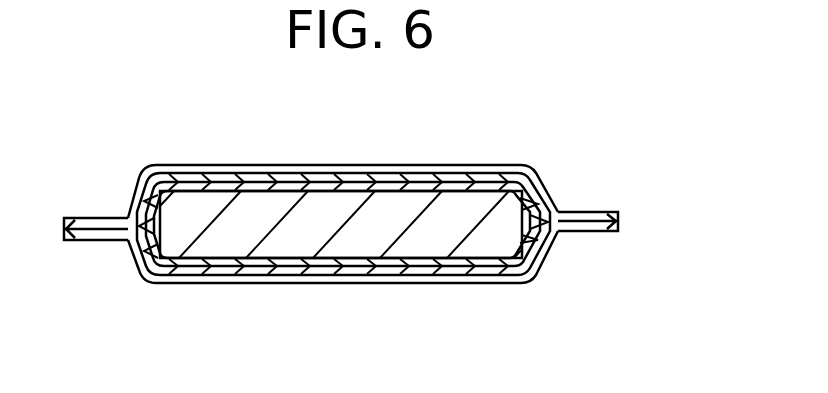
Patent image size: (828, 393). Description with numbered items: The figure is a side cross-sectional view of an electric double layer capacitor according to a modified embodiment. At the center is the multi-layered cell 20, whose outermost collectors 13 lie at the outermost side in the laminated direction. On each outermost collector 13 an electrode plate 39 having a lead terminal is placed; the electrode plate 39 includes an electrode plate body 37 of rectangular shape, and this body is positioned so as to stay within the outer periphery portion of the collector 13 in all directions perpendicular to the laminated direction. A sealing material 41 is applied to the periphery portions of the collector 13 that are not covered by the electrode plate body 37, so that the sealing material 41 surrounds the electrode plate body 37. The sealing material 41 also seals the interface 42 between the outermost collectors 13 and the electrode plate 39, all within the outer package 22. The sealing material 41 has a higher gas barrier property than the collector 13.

The outermost collector 13 is at (216, 168).
The multi-layered cell 20 is at (297, 170).
The outer package 22 is at (552, 168).
The electrode plate body 37 is at (370, 170).
The electrode plate 39 is at (445, 168).
The sealing material 41 is at (156, 287).
The interface 42 is at (483, 166).